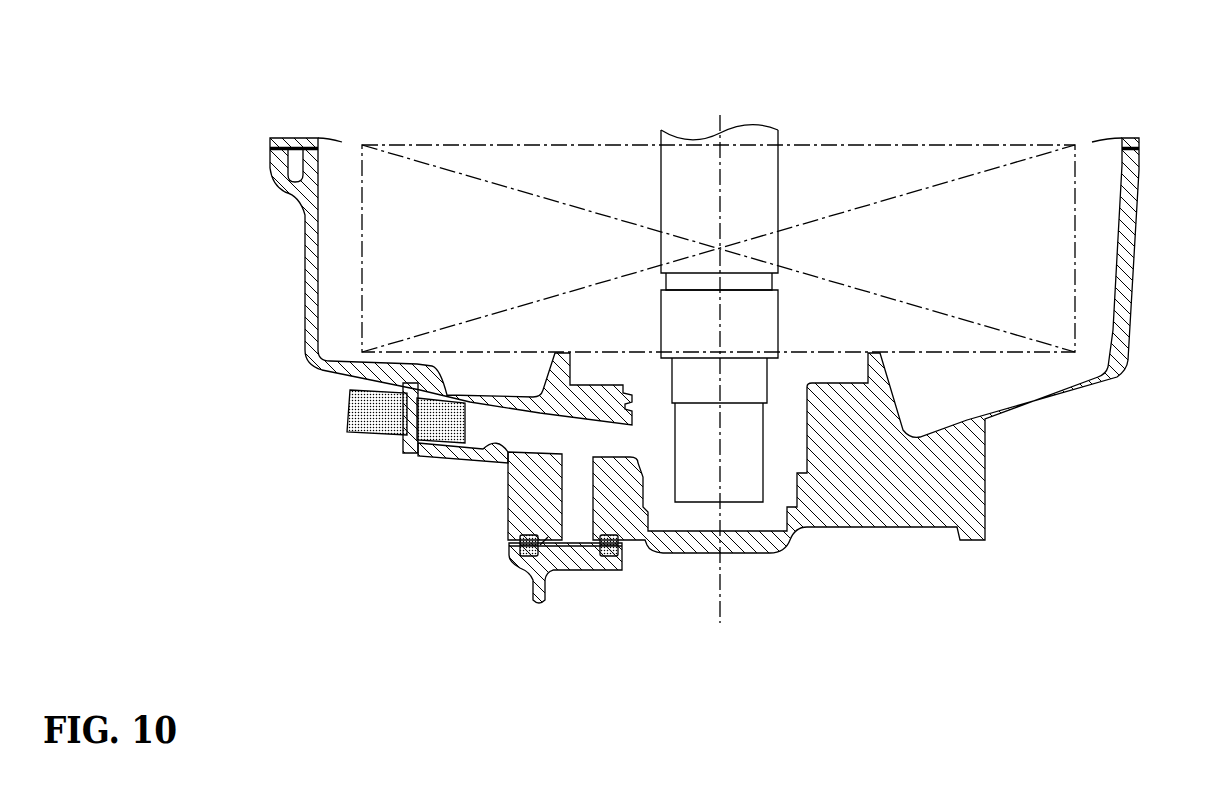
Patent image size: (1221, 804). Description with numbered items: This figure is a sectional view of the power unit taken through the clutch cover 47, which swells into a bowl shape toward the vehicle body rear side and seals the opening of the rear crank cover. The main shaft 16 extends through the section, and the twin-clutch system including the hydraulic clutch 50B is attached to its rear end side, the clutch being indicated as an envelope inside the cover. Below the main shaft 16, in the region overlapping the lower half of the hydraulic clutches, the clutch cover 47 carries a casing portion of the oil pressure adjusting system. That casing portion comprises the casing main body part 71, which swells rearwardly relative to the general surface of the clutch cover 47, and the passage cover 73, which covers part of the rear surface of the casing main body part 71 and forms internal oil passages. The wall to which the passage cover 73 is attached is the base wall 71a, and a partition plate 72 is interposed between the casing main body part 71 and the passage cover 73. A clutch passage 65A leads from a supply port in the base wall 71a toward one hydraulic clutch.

The main shaft 16 is at (768, 171).
The clutch cover 47 is at (307, 338).
The hydraulic clutch 50B is at (1080, 237).
The clutch passage 65A is at (490, 438).
The casing main body part 71 is at (503, 477).
The base wall 71a is at (553, 535).
The partition plate 72 is at (512, 567).
The passage cover 73 is at (571, 578).